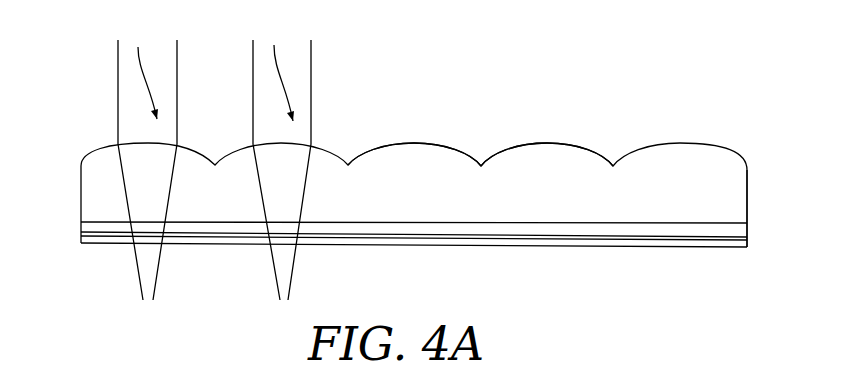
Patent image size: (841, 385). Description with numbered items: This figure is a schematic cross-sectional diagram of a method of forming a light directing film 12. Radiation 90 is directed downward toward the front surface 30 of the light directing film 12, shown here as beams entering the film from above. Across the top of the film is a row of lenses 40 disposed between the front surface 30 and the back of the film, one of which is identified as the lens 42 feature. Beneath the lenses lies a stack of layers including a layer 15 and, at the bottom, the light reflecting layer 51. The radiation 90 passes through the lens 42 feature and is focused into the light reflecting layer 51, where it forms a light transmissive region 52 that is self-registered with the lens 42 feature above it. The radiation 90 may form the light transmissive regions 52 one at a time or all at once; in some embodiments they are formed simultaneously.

The light directing film 12 is at (78, 153).
The layer 15 is at (750, 229).
The front surface 30 is at (433, 130).
The lens 40 is at (749, 172).
The lens feature 42 is at (546, 142).
The light reflecting layer 51 is at (750, 245).
The light transmissive region 52 is at (147, 240).
The radiation 90 is at (317, 63).